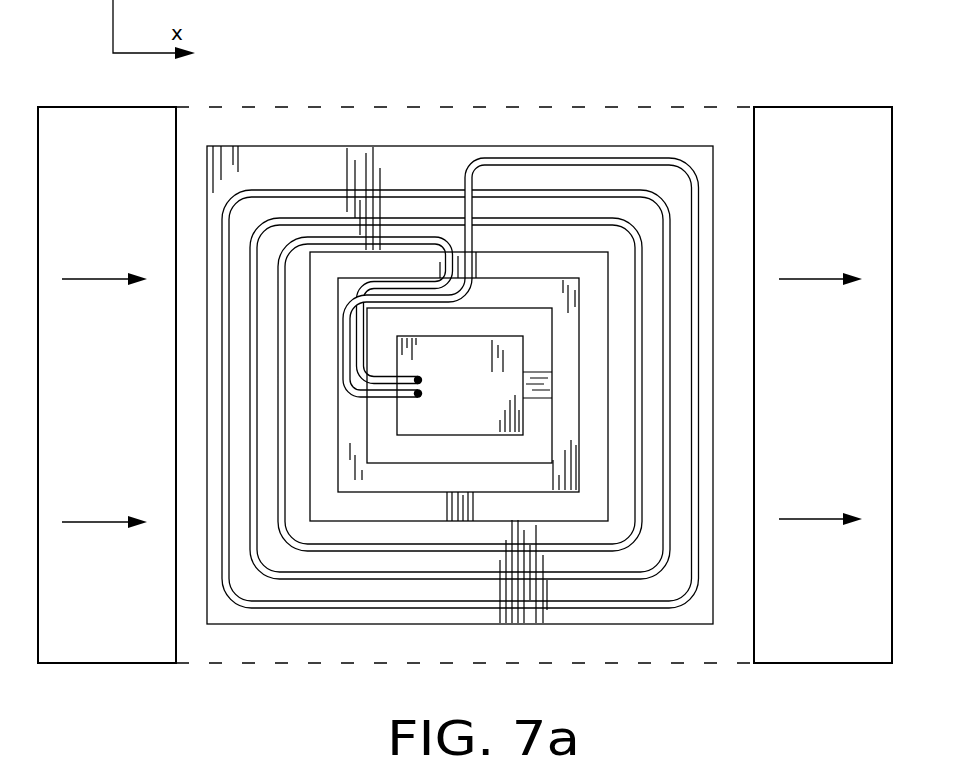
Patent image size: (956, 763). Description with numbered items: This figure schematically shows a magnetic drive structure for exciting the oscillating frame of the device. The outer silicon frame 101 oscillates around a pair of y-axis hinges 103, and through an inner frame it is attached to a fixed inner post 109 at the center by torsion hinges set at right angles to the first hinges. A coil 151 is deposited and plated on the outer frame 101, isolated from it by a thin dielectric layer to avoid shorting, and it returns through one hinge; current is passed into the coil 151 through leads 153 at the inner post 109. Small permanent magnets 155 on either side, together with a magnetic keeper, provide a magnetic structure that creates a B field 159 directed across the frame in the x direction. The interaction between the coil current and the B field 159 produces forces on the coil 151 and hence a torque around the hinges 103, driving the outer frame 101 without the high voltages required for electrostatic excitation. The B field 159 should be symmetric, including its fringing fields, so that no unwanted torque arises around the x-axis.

The outer silicon frame 101 is at (282, 163).
The hinges 103 is at (458, 492).
The fixed inner post 109 is at (481, 424).
The coil 151 is at (515, 160).
The leads 153 is at (405, 378).
The permanent magnets 155 is at (96, 665).
The B field 159 is at (92, 280).